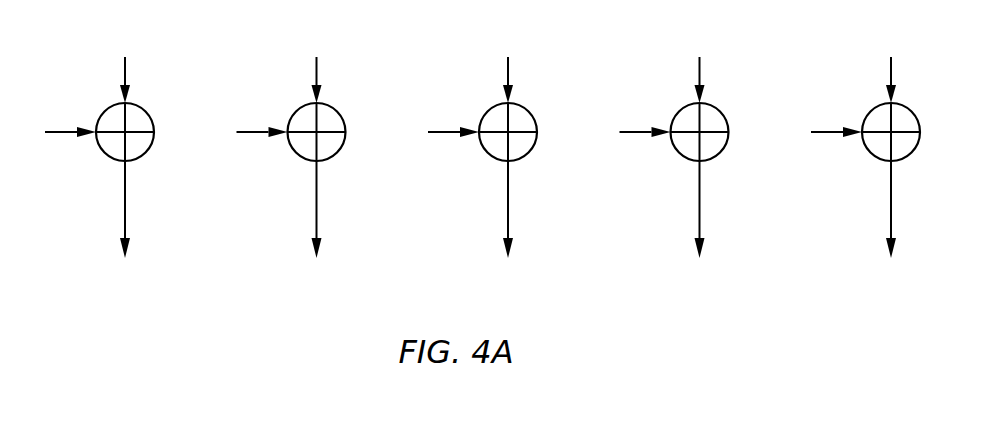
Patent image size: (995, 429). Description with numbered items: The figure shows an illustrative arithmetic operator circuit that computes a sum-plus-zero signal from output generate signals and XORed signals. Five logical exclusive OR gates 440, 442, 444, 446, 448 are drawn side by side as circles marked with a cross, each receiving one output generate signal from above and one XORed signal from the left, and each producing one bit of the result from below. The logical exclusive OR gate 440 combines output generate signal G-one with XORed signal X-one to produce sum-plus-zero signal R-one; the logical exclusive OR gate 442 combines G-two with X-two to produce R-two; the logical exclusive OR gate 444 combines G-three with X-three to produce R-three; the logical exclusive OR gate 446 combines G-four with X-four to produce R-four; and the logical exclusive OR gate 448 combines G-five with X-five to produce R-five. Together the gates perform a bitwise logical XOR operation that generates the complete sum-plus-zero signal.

The logical exclusive OR gate 440 is at (871, 155).
The logical exclusive OR gate 442 is at (680, 155).
The logical exclusive OR gate 444 is at (488, 155).
The logical exclusive OR gate 446 is at (296, 155).
The logical exclusive OR gate 448 is at (105, 155).